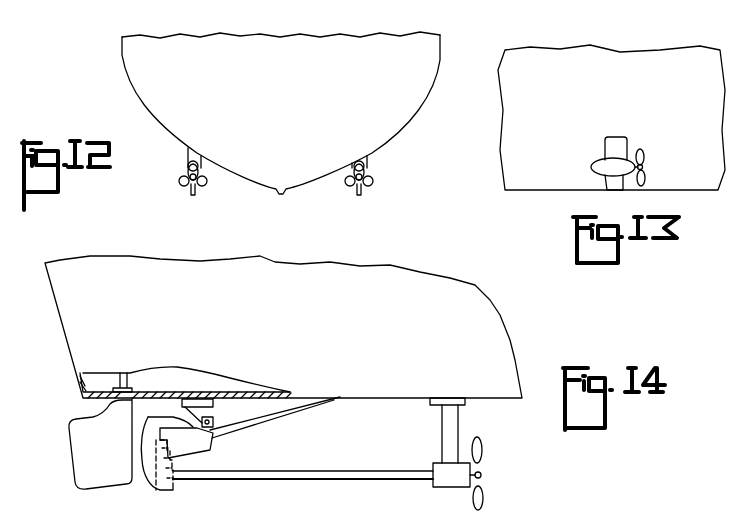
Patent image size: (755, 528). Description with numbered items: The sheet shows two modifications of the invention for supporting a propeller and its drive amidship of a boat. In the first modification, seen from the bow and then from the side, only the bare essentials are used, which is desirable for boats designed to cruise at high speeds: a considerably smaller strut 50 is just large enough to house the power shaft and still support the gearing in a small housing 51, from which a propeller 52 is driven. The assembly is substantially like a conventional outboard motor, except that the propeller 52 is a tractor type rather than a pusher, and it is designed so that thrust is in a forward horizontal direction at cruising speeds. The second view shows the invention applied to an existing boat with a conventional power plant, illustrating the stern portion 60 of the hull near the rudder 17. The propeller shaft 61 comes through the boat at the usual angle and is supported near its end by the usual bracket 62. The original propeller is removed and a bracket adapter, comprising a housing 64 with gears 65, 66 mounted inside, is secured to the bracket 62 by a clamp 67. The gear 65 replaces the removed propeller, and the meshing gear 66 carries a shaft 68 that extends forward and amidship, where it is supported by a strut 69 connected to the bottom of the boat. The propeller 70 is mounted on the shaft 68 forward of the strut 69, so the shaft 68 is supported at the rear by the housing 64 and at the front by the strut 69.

In FIG. 14, the rudder 17 is at (106, 461).
In FIG. 12, the strut 50 is at (187, 155).
In FIG. 13, the strut 50 is at (629, 147).
In FIG. 12, the housing 51 is at (202, 173).
In FIG. 13, the housing 51 is at (601, 165).
In FIG. 12, the propeller 52 is at (203, 190).
In FIG. 13, the propeller 52 is at (646, 160).
In FIG. 14, the stern portion 60 is at (160, 333).
In FIG. 14, the propeller shaft 61 is at (274, 417).
In FIG. 14, the bracket 62 is at (208, 410).
In FIG. 14, the housing 64 is at (148, 478).
In FIG. 14, the gear 65 is at (171, 460).
In FIG. 14, the gear 66 is at (165, 490).
In FIG. 14, the clamp 67 is at (186, 416).
In FIG. 14, the shaft 68 is at (296, 467).
In FIG. 14, the strut 69 is at (447, 432).
In FIG. 14, the propeller 70 is at (484, 443).